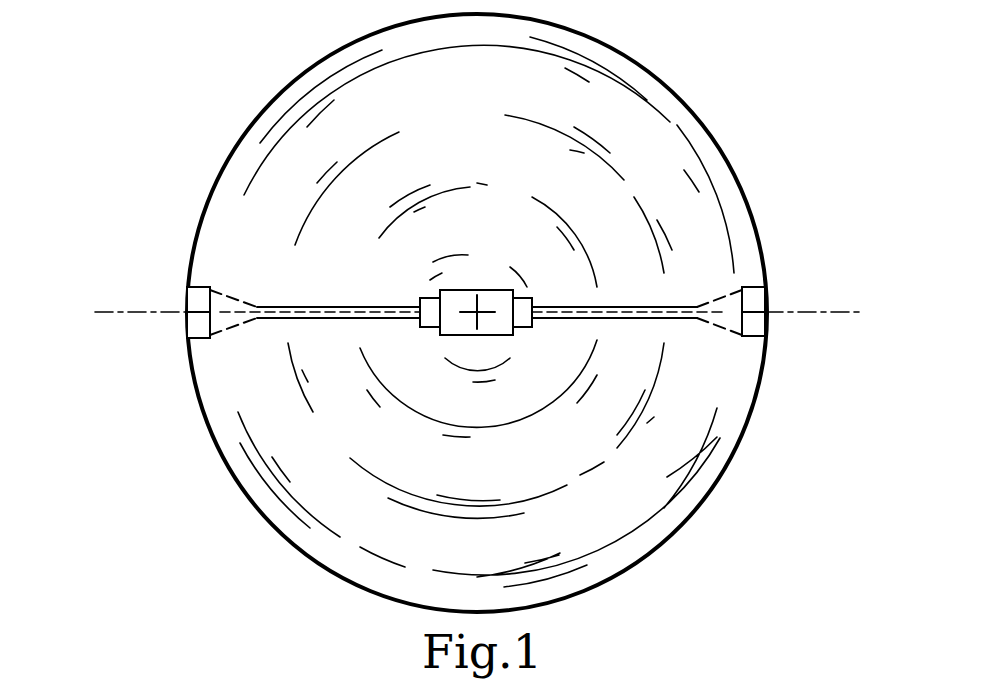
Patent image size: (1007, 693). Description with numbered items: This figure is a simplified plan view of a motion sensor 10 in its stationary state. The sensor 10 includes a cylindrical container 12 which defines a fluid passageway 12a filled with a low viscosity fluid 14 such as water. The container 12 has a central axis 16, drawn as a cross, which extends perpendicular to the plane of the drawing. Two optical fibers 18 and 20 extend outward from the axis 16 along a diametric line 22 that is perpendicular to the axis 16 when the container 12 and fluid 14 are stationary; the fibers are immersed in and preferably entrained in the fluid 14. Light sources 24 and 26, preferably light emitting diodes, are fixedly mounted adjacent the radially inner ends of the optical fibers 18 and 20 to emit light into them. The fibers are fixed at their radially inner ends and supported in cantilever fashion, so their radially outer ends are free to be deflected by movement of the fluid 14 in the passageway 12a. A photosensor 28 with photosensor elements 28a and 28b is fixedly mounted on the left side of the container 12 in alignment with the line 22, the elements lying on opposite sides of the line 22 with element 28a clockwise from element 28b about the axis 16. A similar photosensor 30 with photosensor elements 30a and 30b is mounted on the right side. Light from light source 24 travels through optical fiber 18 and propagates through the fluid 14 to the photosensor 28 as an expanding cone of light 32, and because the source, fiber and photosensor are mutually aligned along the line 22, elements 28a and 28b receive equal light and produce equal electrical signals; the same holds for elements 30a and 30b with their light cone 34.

The sensor 10 is at (184, 177).
The cylindrical container 12 is at (262, 106).
The fluid passageway 12a is at (662, 160).
The low viscosity fluid 14 is at (494, 151).
The central axis 16 is at (485, 308).
The optical fiber 18 is at (347, 306).
The optical fiber 20 is at (620, 306).
The diametric line 22 is at (102, 312).
The light source 24 is at (430, 327).
The light source 26 is at (523, 327).
The photosensor 28 is at (183, 299).
The photosensor element 28a is at (196, 300).
The photosensor element 28b is at (196, 326).
The photosensor 30 is at (776, 294).
The photosensor element 30a is at (760, 327).
The photosensor element 30b is at (760, 297).
The cone of light 32 is at (227, 328).
The cone of light 34 is at (718, 330).